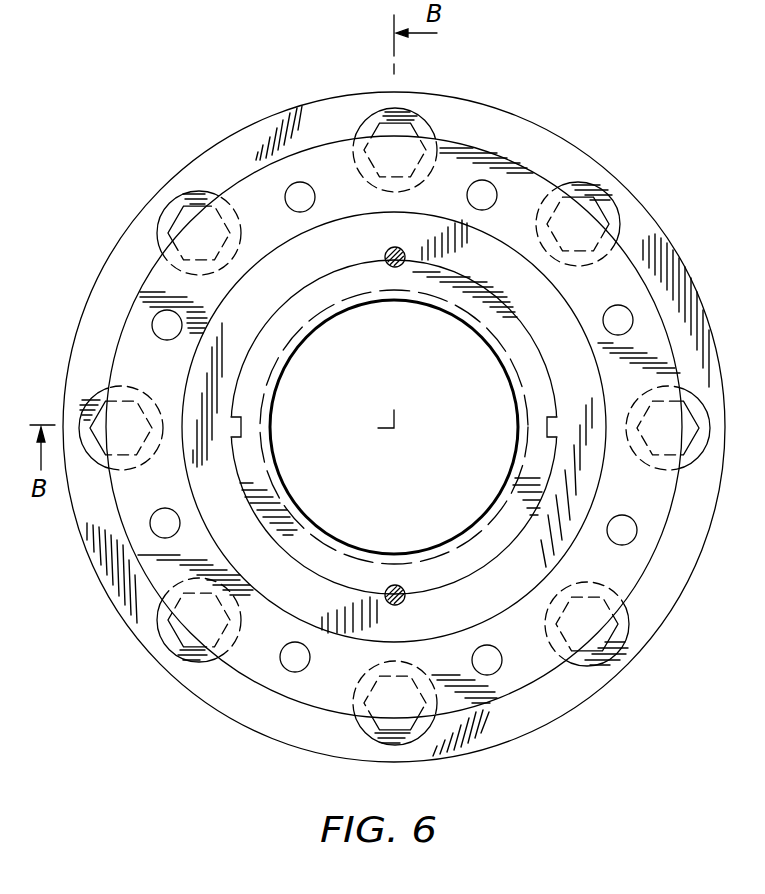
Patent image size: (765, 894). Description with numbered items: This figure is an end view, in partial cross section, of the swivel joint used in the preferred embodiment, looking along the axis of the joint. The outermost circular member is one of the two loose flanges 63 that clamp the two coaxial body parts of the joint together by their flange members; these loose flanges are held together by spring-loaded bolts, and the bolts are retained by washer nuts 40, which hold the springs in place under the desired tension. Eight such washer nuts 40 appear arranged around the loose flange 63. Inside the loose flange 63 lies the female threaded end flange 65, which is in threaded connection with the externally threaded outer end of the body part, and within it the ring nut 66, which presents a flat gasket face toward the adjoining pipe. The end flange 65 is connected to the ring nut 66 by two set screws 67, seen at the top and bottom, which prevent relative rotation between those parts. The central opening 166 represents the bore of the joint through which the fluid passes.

The washer nuts 40 is at (192, 196).
The loose flange 63 is at (257, 127).
The end flange 65 is at (242, 178).
The ring nut 66 is at (274, 243).
The set screws 67 is at (410, 236).
The bore 166 is at (297, 348).